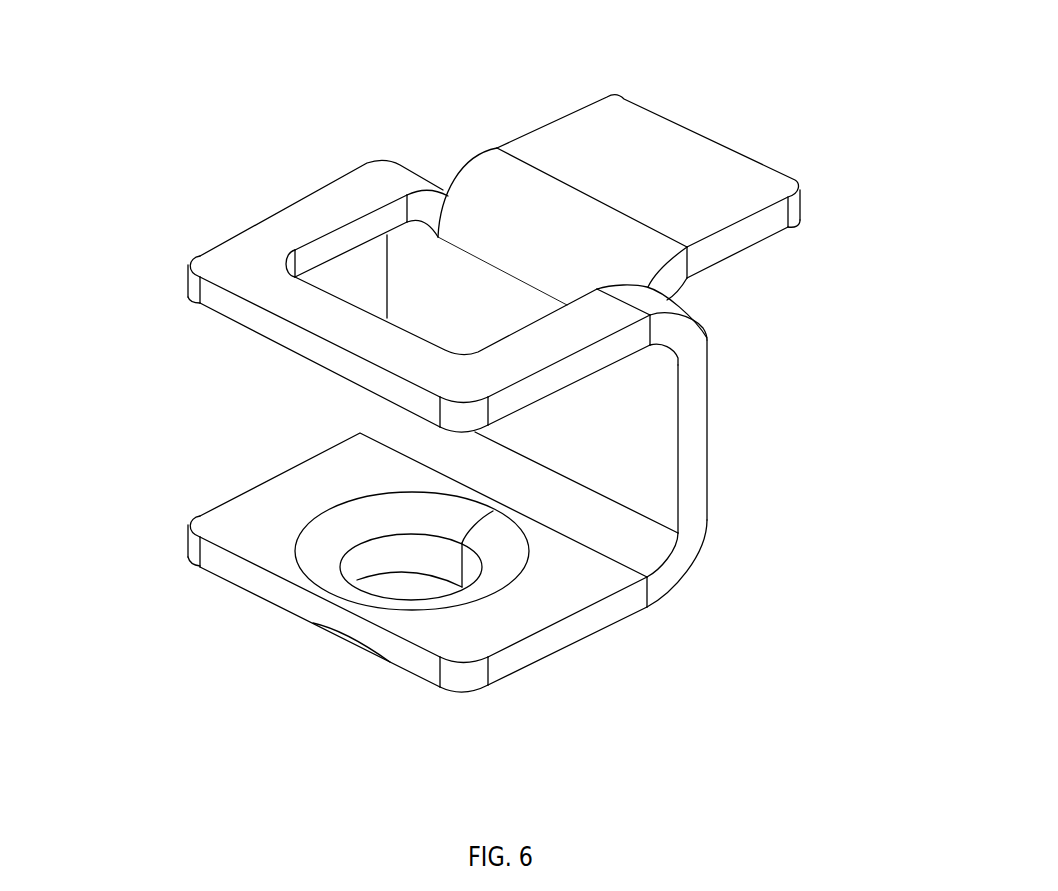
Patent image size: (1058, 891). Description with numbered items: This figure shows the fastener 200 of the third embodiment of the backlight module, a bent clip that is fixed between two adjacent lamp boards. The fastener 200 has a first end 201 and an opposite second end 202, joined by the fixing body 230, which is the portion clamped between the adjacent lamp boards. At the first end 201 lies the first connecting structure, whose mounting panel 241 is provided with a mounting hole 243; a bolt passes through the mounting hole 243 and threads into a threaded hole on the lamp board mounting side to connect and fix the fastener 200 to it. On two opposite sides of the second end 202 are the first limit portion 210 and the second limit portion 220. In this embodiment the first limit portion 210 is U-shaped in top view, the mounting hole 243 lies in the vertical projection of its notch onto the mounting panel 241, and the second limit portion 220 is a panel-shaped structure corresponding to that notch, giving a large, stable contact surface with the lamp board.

The fastener 200 is at (500, 411).
The first end 201 is at (683, 522).
The second end 202 is at (668, 360).
The first limit portion 210 is at (250, 260).
The second limit portion 220 is at (655, 162).
The fixing body 230 is at (663, 412).
The mounting panel 241 is at (575, 572).
The mounting hole 243 is at (407, 560).